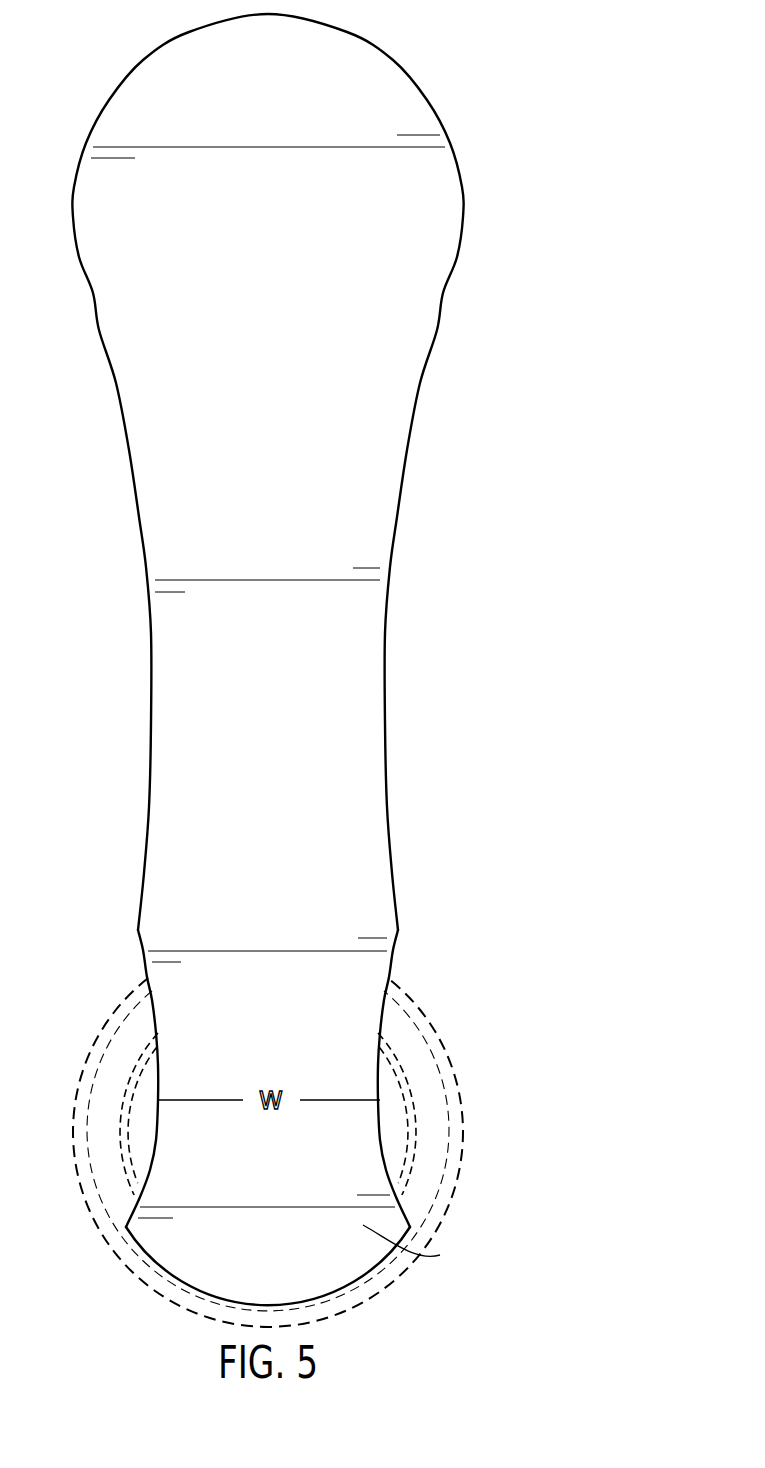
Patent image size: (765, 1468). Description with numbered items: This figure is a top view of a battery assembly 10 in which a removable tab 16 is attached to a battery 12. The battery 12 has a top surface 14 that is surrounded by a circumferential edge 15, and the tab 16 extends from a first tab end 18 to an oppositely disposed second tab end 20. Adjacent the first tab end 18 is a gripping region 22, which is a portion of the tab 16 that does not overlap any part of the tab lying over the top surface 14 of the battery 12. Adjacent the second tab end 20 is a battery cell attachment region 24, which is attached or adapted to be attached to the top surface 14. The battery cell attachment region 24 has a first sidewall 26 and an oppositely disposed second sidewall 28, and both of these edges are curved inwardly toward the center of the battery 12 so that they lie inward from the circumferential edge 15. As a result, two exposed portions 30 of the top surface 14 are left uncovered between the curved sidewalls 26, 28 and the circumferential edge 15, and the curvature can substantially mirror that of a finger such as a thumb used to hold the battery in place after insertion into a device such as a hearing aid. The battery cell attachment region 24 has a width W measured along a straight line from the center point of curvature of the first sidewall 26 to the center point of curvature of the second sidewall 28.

The battery assembly 10 is at (571, 78).
The battery 12 is at (102, 1272).
The top surface 14 is at (458, 1157).
The circumferential edge 15 is at (418, 991).
The removable tab 16 is at (405, 618).
The first tab end 18 is at (347, 32).
The second tab end 20 is at (353, 1285).
The gripping region 22 is at (405, 382).
The battery cell attachment region 24 is at (418, 1248).
The first sidewall 26 is at (157, 1035).
The second sidewall 28 is at (380, 1033).
The exposed portion 30 is at (100, 1103).